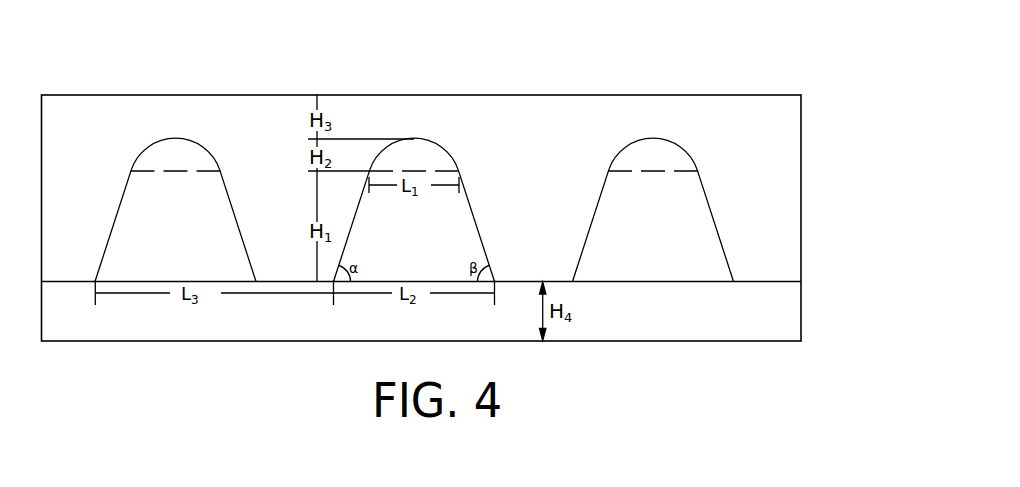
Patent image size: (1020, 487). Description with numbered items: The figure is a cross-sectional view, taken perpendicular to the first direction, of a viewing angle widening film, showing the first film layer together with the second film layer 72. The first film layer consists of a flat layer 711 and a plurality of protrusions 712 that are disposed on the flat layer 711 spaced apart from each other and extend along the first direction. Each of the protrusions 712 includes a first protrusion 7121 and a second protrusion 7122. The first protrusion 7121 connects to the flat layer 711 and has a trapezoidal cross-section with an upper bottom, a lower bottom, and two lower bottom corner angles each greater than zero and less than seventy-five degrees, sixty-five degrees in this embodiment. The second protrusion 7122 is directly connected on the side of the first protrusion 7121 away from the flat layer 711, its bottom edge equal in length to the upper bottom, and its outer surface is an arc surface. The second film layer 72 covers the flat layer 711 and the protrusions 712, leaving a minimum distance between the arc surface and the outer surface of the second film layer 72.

The second film layer 72 is at (801, 182).
The flat layer 711 is at (801, 315).
The protrusions 712 is at (414, 151).
The first protrusion 7121 is at (425, 206).
The second protrusion 7122 is at (417, 148).